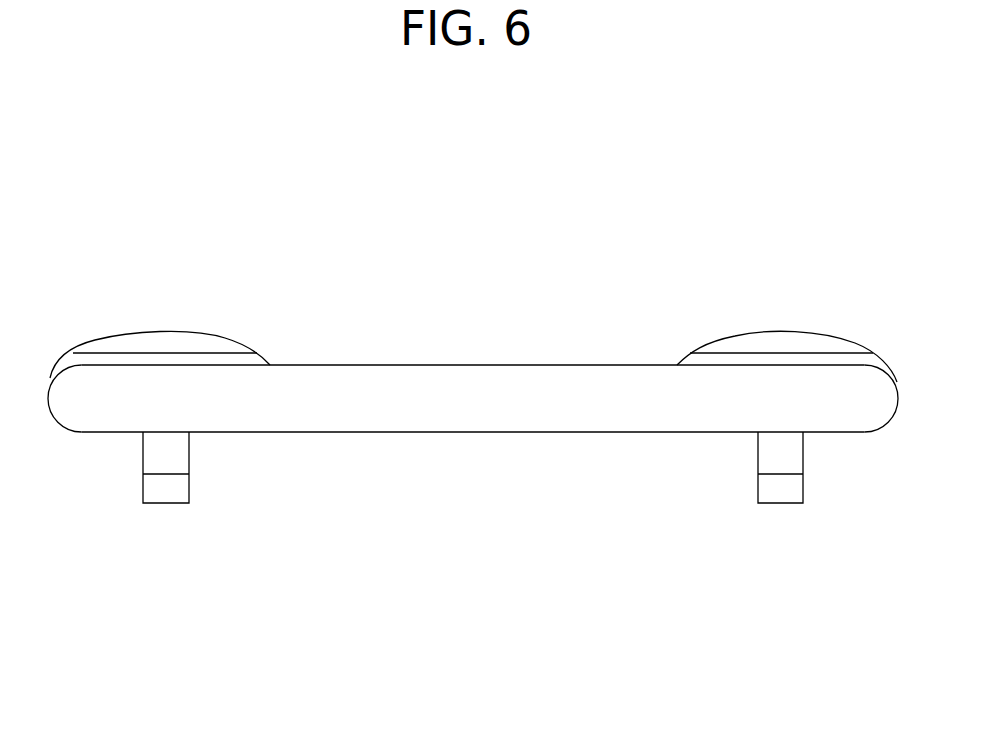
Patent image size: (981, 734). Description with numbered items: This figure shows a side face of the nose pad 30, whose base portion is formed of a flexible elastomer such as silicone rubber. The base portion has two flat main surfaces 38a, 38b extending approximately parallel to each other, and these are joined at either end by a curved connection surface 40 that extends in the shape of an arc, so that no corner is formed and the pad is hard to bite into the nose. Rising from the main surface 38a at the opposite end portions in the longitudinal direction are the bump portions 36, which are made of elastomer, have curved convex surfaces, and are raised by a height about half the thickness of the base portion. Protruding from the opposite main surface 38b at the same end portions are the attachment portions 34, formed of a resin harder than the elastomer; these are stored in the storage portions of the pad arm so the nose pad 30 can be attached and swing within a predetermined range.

The nose pad 30 is at (517, 197).
The attachment portion 34 is at (182, 462).
The bump portion 36 is at (162, 342).
The main surface 38a is at (423, 365).
The main surface 38b is at (335, 433).
The connection surface 40 is at (513, 418).